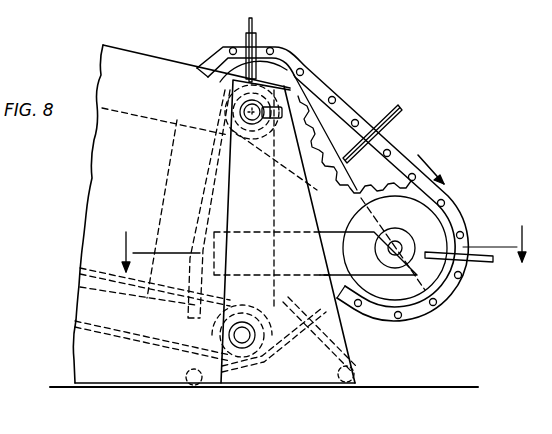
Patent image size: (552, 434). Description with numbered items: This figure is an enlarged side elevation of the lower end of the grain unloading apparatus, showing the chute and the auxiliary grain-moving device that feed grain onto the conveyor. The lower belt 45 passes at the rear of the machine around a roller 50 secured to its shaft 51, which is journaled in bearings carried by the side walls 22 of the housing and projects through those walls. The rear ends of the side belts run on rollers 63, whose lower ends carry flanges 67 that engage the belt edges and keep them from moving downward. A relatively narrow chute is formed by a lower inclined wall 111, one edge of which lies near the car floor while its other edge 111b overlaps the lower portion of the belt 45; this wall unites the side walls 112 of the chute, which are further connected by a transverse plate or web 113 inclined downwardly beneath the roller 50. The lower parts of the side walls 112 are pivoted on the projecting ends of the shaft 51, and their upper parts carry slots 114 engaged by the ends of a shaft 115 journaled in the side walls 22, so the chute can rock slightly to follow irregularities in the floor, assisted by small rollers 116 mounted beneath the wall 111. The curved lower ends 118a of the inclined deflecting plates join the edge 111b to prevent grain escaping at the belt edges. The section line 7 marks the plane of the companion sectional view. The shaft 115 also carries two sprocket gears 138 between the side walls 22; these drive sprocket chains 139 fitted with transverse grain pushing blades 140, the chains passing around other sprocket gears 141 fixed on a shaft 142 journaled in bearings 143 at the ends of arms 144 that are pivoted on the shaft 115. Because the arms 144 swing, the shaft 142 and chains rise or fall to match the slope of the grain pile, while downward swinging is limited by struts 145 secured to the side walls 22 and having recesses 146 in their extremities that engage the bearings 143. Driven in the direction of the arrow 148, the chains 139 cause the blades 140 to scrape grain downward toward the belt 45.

The side walls 22 is at (152, 66).
The lower inclined wall 111 is at (288, 231).
The upper edge of the lower wall 111b is at (272, 296).
The struts 145 is at (372, 270).
The shaft 115 is at (240, 113).
The slots 114 is at (276, 112).
The grain pushing blades 140 is at (247, 36).
The sprocket gears 141 is at (440, 196).
The arrow 148 is at (445, 162).
The recesses 146 is at (435, 305).
The sprocket gears 138 is at (326, 92).
The shaft 142 is at (396, 248).
The bearings 143 is at (451, 271).
The sprocket chains 139 is at (413, 150).
The arms 144 is at (338, 164).
The shaft 51 is at (249, 0).
The side walls of the chute 112 is at (366, 341).
The curved lower ends of the deflecting plates 118a is at (227, 6).
The small rollers 116 is at (384, 379).
The rollers 63 is at (172, 181).
The flanges 67 is at (140, 305).
The lower belt 45 is at (152, 341).
The roller 50 is at (289, 334).
The transverse plate or web 113 is at (188, 389).
The section line 7— 7 is at (324, 246).